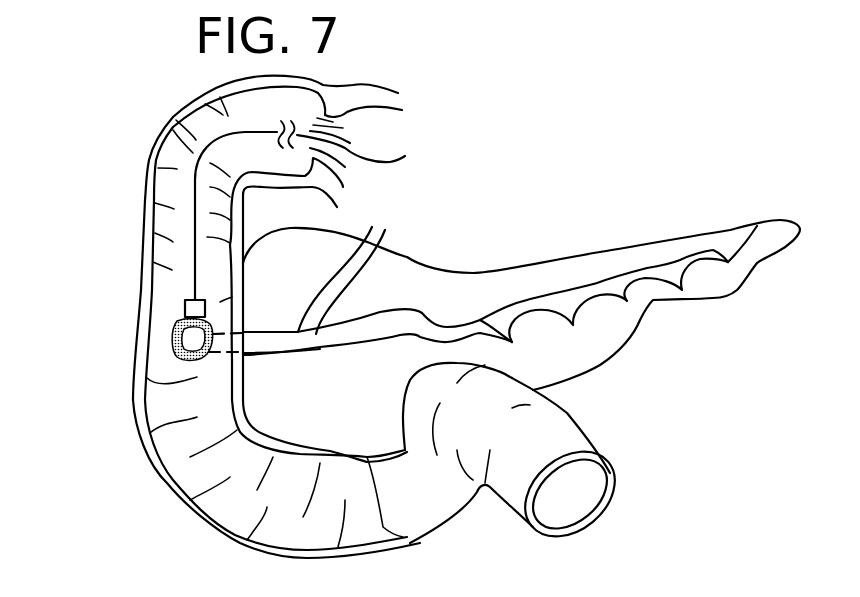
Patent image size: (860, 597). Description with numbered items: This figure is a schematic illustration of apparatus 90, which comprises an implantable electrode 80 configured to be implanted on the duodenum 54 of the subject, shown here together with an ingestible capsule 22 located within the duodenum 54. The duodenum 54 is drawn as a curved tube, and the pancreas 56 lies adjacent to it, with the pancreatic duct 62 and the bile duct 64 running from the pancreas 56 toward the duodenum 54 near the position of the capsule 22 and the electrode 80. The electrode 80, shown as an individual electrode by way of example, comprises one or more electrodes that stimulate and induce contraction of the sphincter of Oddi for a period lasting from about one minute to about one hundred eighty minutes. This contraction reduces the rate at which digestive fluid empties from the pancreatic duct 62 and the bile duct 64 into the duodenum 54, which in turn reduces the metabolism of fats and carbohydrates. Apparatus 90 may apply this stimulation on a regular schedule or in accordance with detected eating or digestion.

The ingestible capsule 22 is at (172, 334).
The duodenum 54 is at (157, 190).
The pancreas 56 is at (700, 278).
The pancreatic duct 62 is at (320, 344).
The bile duct 64 is at (398, 244).
The implantable electrode 80 is at (195, 299).
The apparatus 90 is at (115, 428).